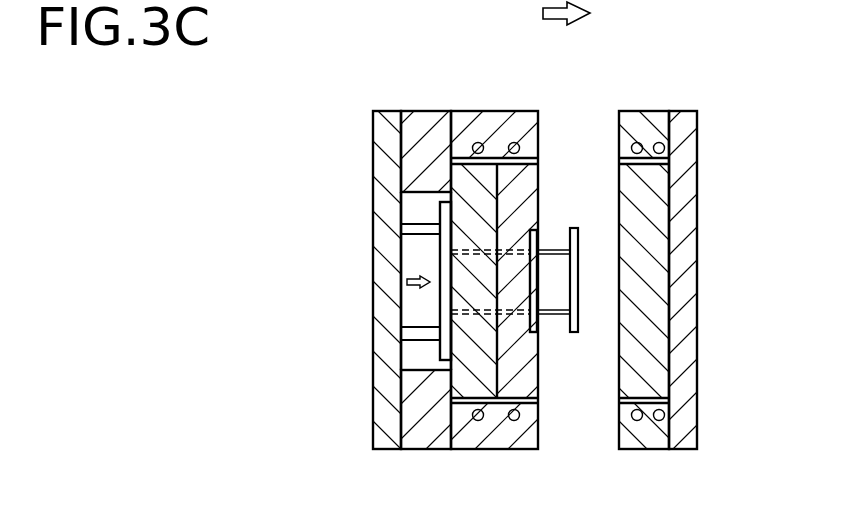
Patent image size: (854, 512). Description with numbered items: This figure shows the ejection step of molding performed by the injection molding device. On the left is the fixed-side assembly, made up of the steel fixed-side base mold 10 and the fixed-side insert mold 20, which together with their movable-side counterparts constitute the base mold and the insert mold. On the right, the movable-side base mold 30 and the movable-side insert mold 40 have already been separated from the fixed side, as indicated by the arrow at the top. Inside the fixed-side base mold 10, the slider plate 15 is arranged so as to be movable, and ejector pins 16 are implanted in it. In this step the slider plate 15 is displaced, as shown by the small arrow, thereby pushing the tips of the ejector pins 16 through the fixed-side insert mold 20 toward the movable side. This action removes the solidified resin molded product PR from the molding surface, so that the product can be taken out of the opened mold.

The fixed-side base mold 10 is at (373, 111).
The slider plate 15 is at (440, 250).
The ejector pins 16 is at (550, 246).
The fixed-side insert mold 20 is at (541, 372).
The resin molded product PR is at (574, 228).
The movable-side base mold 30 is at (697, 111).
The movable-side insert mold 40 is at (620, 381).